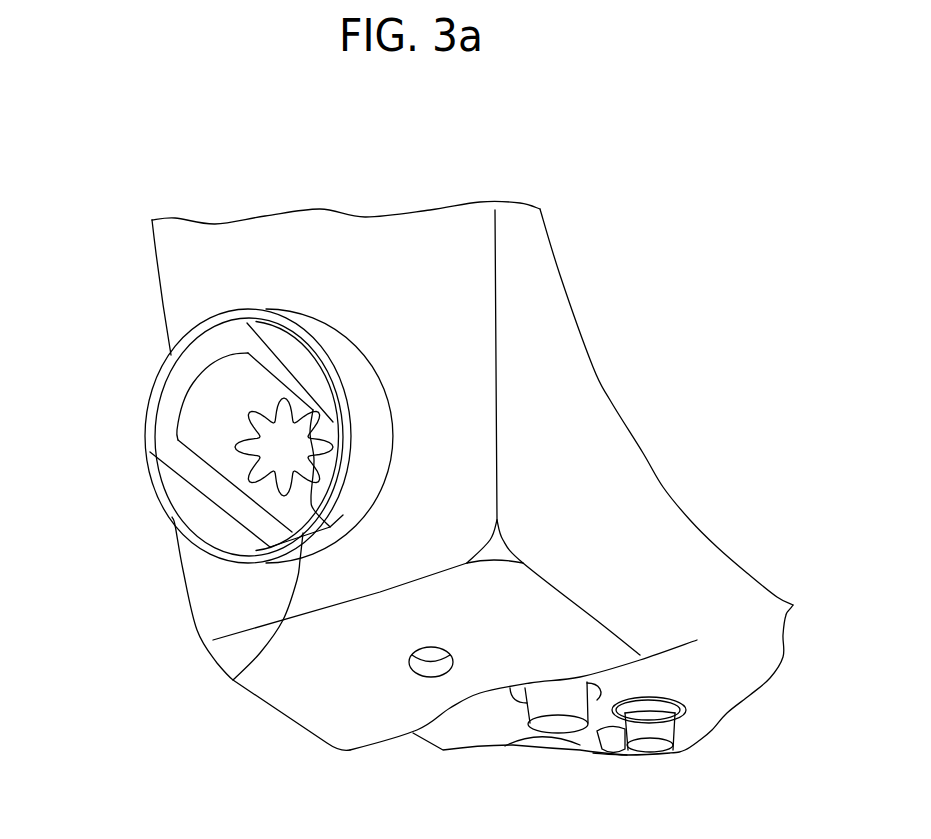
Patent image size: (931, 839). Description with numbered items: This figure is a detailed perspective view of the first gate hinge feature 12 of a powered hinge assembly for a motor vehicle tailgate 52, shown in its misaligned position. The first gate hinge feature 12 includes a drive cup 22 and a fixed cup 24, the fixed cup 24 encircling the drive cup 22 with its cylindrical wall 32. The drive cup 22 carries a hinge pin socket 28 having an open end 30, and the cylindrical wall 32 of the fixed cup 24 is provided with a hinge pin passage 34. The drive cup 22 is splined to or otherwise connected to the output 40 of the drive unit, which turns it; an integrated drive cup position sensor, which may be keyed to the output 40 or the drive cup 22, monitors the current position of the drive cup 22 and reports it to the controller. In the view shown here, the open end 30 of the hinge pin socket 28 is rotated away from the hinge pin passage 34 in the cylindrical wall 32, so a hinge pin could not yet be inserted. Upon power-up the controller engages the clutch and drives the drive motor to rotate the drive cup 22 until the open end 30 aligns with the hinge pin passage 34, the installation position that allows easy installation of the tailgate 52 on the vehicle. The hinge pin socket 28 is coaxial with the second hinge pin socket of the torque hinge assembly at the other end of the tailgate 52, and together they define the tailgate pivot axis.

The first gate hinge feature 12 is at (158, 534).
The drive cup 22 is at (163, 435).
The fixed cup 24 is at (360, 385).
The hinge pin socket 28 is at (225, 383).
The open end 30 is at (230, 673).
The cylindrical wall 32 is at (372, 437).
The hinge pin passage 34 is at (240, 550).
The output 40 is at (262, 459).
The tailgate 52 is at (573, 514).